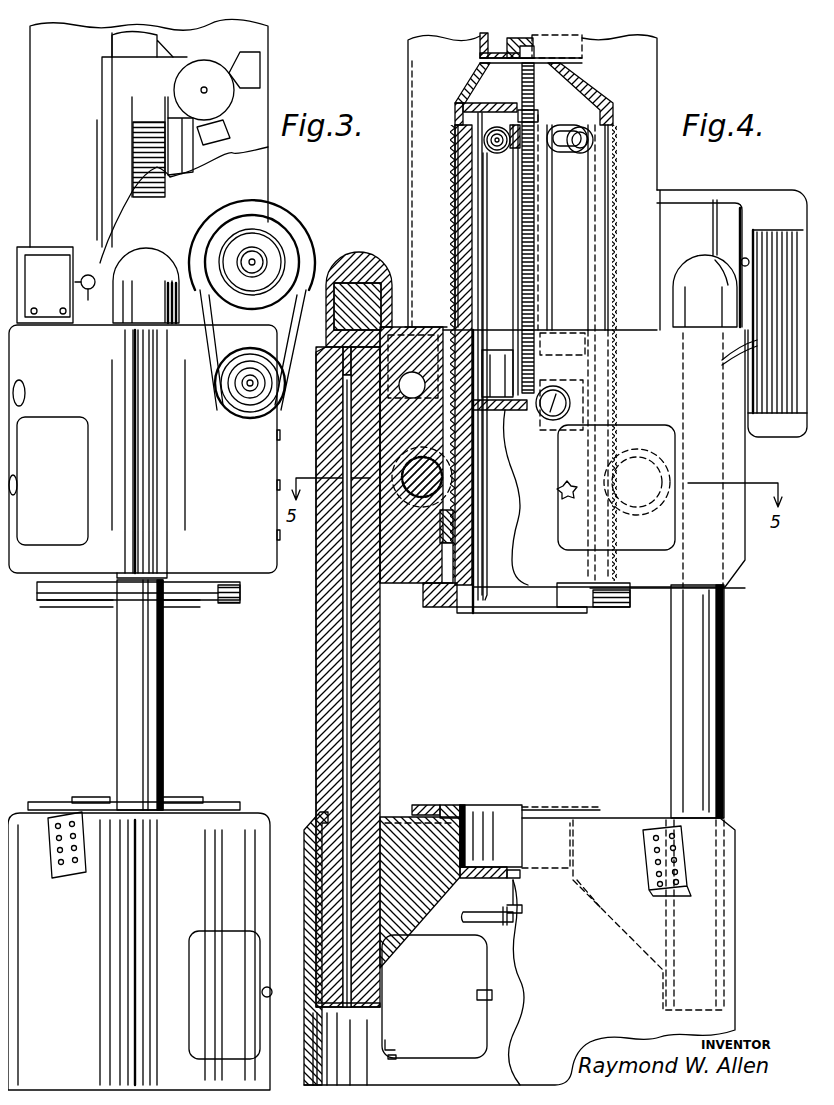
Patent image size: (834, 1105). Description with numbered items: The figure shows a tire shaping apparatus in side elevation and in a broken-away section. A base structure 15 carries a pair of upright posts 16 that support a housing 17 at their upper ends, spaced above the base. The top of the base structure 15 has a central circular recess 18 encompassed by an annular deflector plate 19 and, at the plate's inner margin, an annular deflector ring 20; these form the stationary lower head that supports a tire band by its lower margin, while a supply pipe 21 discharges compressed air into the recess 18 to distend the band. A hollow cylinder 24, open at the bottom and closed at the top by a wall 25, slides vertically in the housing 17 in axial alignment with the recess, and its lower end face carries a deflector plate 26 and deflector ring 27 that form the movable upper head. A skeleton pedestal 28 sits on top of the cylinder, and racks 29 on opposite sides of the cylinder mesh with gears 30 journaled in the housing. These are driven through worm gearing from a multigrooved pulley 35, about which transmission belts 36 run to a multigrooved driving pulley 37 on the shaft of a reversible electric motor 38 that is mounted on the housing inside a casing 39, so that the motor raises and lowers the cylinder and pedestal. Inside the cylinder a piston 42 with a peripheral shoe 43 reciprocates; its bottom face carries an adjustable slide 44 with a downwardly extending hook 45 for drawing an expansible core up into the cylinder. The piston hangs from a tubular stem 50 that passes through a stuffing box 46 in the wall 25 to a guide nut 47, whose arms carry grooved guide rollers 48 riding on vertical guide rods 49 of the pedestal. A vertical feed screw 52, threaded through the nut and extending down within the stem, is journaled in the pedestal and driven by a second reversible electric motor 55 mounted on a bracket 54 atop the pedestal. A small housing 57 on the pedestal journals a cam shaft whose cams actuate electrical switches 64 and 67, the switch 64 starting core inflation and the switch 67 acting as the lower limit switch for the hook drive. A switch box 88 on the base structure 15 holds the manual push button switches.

In FIG. 3, the base structure 15 is at (230, 815).
In FIG. 4, the base structure 15 is at (740, 900).
In FIG. 3, the upright posts 16 is at (160, 710).
In FIG. 4, the upright posts 16 is at (318, 706).
In FIG. 3, the housing 17 is at (255, 578).
In FIG. 4, the housing 17 is at (745, 556).
In FIG. 4, the central circular recess 18 is at (466, 818).
In FIG. 3, the annular deflector plate 19 is at (222, 788).
In FIG. 4, the annular deflector plate 19 is at (418, 805).
In FIG. 3, the annular deflector ring 20 is at (195, 802).
In FIG. 4, the annular deflector ring 20 is at (450, 805).
In FIG. 4, the supply pipe 21 is at (495, 912).
In FIG. 3, the hollow cylinder 24 is at (230, 605).
In FIG. 4, the hollow cylinder 24 is at (598, 610).
In FIG. 4, the wall 25 is at (510, 330).
In FIG. 3, the deflector plate 26 is at (50, 608).
In FIG. 4, the deflector plate 26 is at (436, 607).
In FIG. 3, the deflector ring 27 is at (84, 608).
In FIG. 4, the deflector ring 27 is at (482, 613).
In FIG. 3, the skeleton pedestal 28 is at (127, 95).
In FIG. 4, the skeleton pedestal 28 is at (455, 110).
In FIG. 3, the racks 29 is at (140, 172).
In FIG. 4, the racks 29 is at (450, 253).
In FIG. 4, the gears 30 is at (417, 498).
In FIG. 3, the multigrooved pulley 35 is at (272, 410).
In FIG. 4, the multigrooved pulley 35 is at (750, 437).
In FIG. 3, the transmission belts 36 is at (220, 325).
In FIG. 4, the transmission belts 36 is at (722, 356).
In FIG. 3, the multigrooved driving pulley 37 is at (290, 258).
In FIG. 4, the multigrooved driving pulley 37 is at (754, 232).
In FIG. 3, the reversible electric motor 38 is at (283, 214).
In FIG. 4, the reversible electric motor 38 is at (684, 213).
In FIG. 4, the casing 39 is at (746, 191).
In FIG. 4, the piston 42 is at (555, 421).
In FIG. 4, the peripheral shoe 43 is at (412, 385).
In FIG. 4, the adjustable slide 44 is at (562, 442).
In FIG. 4, the hook 45 is at (508, 472).
In FIG. 4, the stuffing box 46 is at (505, 398).
In FIG. 4, the guide nut 47 is at (568, 152).
In FIG. 4, the grooved guide rollers 48 is at (592, 103).
In FIG. 4, the vertical guide rods 49 is at (548, 185).
In FIG. 4, the tubular stem 50 is at (513, 203).
In FIG. 4, the feed screw 52 is at (522, 278).
In FIG. 3, the bracket 54 is at (118, 43).
In FIG. 4, the bracket 54 is at (588, 44).
In FIG. 4, the reversible electric motor 55 is at (520, 85).
In FIG. 3, the small housing 57 is at (229, 103).
In FIG. 3, the electrical switch 64 is at (260, 60).
In FIG. 3, the electrical switch 67 is at (218, 145).
In FIG. 3, the switch box 88 is at (48, 835).
In FIG. 4, the switch box 88 is at (644, 848).